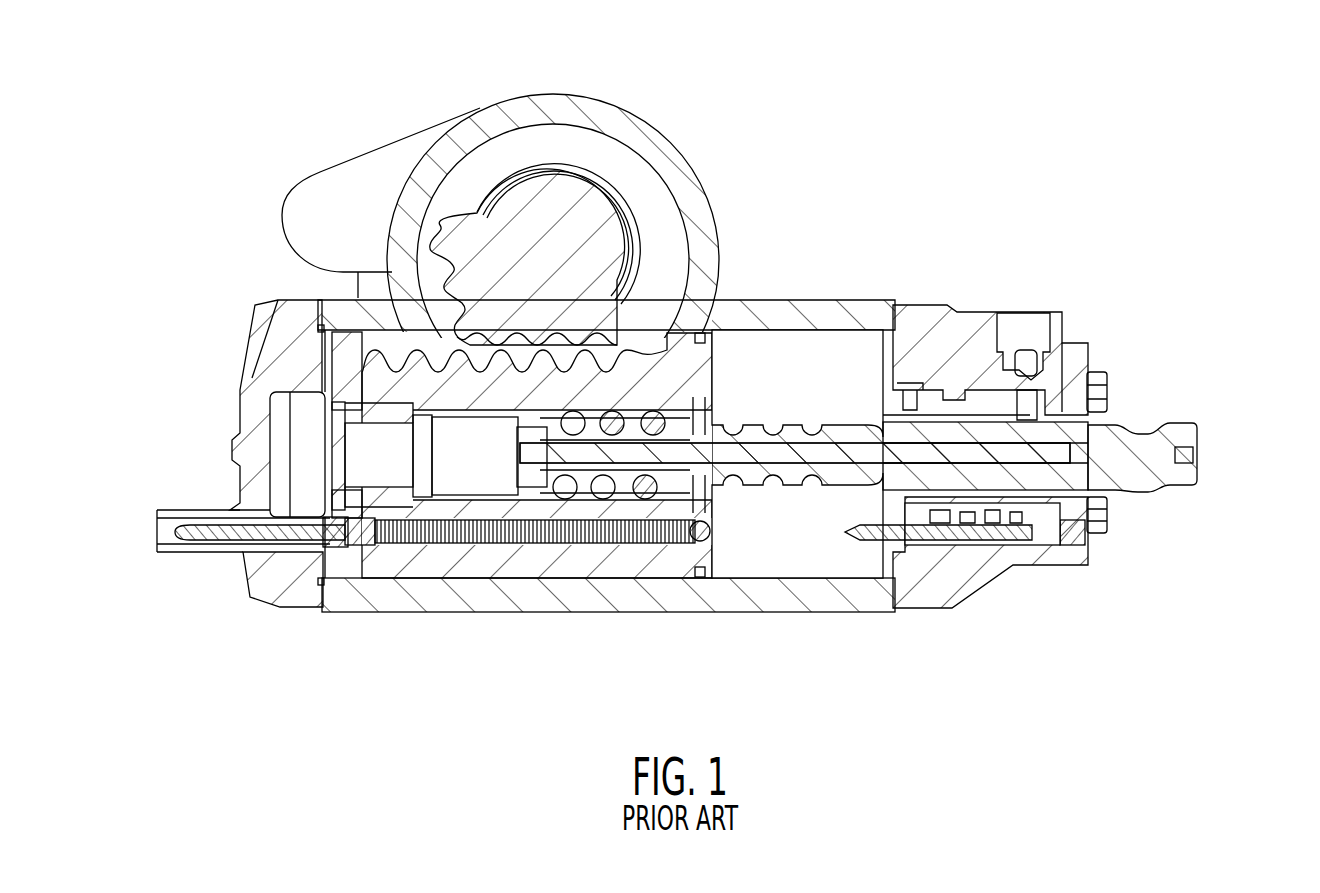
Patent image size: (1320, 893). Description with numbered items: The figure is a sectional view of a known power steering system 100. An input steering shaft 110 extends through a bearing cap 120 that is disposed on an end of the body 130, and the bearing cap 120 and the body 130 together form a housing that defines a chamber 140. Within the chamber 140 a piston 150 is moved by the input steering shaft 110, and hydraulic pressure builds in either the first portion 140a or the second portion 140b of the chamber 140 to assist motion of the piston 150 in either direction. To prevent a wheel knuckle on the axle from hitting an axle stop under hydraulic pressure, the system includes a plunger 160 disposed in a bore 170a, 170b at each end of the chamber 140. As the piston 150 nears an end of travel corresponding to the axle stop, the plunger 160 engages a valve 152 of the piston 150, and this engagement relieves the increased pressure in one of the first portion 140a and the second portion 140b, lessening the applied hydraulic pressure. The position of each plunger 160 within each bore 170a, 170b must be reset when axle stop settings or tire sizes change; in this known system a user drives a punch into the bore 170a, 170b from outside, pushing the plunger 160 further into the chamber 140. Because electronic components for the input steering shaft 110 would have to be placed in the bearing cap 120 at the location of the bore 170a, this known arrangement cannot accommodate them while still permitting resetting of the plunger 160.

The power steering system 100 is at (1005, 127).
The input steering shaft 110 is at (1145, 445).
The bearing cap 120 is at (990, 312).
The body 130 is at (878, 305).
The chamber 140 is at (800, 345).
The first portion 140a is at (350, 358).
The second portion 140b is at (845, 340).
The piston 150 is at (693, 370).
The valve 152 is at (385, 548).
The plunger 160 is at (320, 545).
The bore 170a is at (1005, 567).
The bore 170b is at (236, 552).